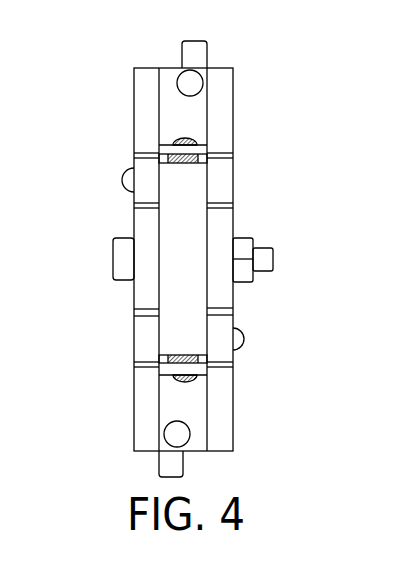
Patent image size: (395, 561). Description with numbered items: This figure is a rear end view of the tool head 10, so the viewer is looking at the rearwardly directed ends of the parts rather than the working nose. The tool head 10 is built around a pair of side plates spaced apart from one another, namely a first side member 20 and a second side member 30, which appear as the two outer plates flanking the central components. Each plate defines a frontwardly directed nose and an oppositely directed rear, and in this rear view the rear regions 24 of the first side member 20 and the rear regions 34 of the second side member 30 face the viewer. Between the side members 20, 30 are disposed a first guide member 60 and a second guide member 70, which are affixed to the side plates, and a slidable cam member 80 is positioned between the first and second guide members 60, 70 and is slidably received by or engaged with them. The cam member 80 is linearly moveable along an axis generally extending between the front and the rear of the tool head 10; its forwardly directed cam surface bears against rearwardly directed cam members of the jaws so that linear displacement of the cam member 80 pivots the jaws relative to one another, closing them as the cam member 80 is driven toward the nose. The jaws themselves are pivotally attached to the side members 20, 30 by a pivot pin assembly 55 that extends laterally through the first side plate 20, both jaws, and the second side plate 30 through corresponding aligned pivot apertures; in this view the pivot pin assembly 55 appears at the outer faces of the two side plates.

The tool head 10 is at (97, 69).
The first side member 20 is at (267, 259).
The rear regions 24 is at (222, 109).
The second side member 30 is at (95, 259).
The rear regions 34 is at (142, 109).
The pivot pin assembly 55 is at (115, 260).
The first guide member 60 is at (169, 68).
The second guide member 70 is at (197, 450).
The slidable cam member 80 is at (185, 250).